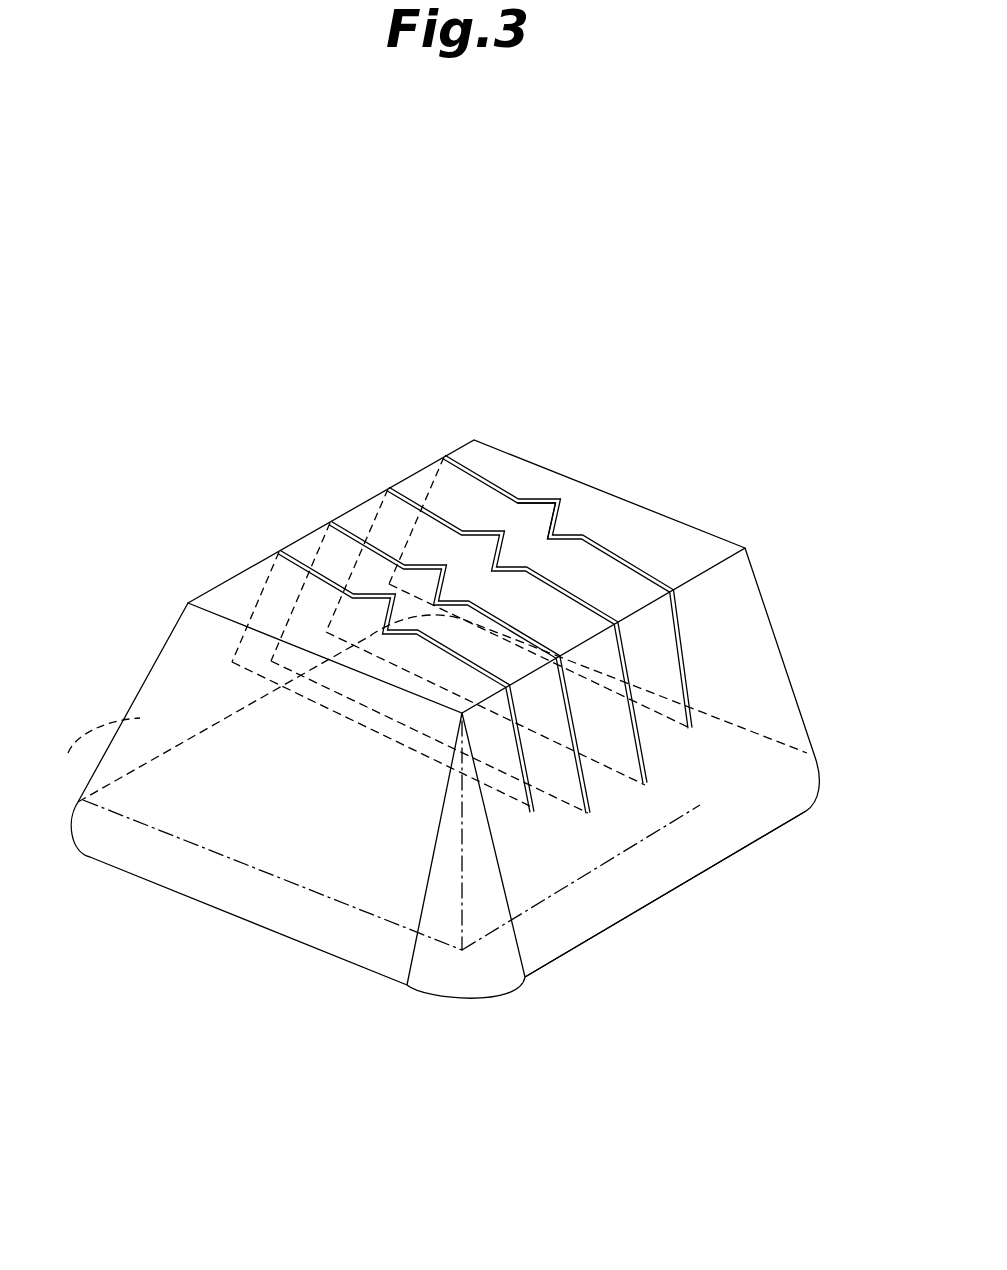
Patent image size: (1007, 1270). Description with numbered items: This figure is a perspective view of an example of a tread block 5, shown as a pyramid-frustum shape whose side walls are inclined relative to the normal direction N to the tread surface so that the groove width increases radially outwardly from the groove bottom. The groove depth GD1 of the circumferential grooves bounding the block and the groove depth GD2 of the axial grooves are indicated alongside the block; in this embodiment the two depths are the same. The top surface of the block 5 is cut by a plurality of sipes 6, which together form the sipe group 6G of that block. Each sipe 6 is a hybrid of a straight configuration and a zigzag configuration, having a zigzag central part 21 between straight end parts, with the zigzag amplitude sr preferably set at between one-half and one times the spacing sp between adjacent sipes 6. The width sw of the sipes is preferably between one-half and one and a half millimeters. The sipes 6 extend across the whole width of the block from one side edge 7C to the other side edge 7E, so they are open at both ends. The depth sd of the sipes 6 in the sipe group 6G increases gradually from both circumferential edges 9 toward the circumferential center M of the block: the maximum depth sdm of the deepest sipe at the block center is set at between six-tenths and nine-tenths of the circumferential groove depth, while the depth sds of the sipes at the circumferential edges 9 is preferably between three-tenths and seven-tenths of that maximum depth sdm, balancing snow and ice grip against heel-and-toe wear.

The block 5 is at (581, 456).
The sipes 6 is at (340, 592).
The sipe group 6G is at (510, 329).
The zigzag central part 21 is at (536, 500).
The circumferential edges 9 is at (290, 855).
The side edge 7C is at (92, 753).
The side edge 7E is at (547, 887).
The circumferential center M is at (591, 626).
The normal direction N is at (392, 962).
The amplitude of the zigzag sr is at (590, 510).
The spacing between the adjacent sipes sp is at (522, 530).
The width of the sipes sw is at (572, 588).
The depth of the sipes sd is at (543, 738).
The depth of the sipes located in the block circumferential edges sds is at (507, 686).
The maximum depth of the deepest sipe sdm is at (558, 657).
The groove depth of the circumferential grooves GD1 is at (360, 510).
The groove depth of the axial grooves GD2 is at (512, 588).